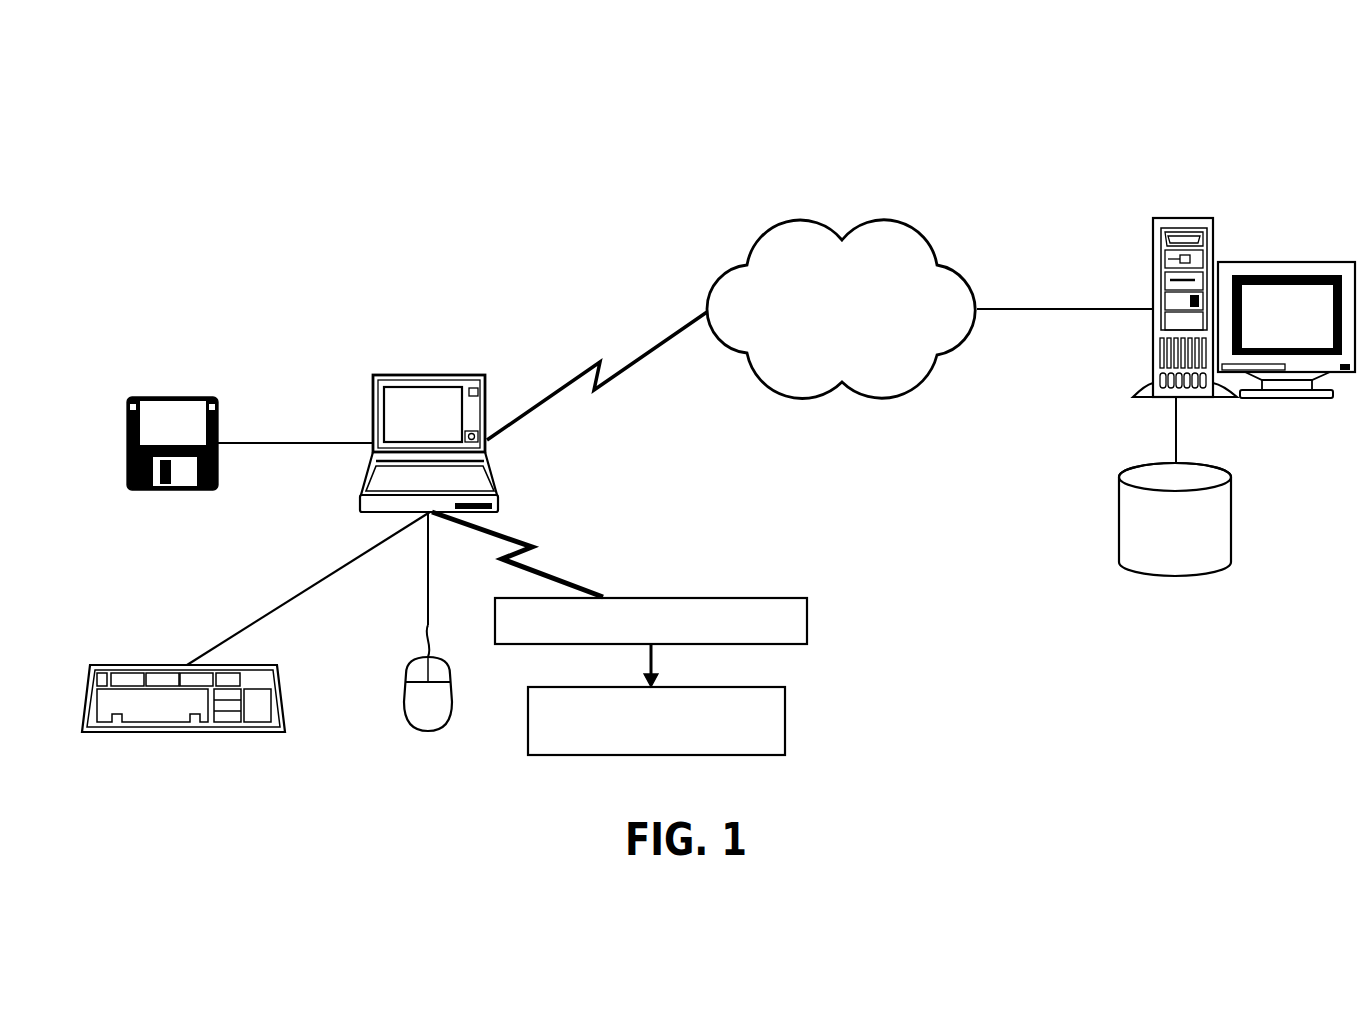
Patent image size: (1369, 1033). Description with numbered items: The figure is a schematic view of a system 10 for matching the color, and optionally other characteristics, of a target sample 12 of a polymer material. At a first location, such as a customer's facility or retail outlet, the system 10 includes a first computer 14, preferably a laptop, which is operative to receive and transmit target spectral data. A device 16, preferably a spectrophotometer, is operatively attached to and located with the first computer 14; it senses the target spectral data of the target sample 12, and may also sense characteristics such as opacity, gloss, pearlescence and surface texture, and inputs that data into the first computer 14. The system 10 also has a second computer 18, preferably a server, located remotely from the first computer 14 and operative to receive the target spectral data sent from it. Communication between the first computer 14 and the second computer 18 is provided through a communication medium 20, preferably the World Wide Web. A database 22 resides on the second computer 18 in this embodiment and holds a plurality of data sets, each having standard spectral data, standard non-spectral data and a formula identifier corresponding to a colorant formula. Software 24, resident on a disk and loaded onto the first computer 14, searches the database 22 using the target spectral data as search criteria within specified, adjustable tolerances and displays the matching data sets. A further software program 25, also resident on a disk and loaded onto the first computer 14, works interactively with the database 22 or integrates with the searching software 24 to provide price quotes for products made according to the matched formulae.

The system 10 is at (333, 327).
The target sample 12 is at (785, 710).
The first computer 14 is at (430, 375).
The device 16 is at (807, 620).
The second computer 18 is at (1287, 400).
The communication medium 20 is at (883, 398).
The database 22 is at (1119, 520).
The software 24 is at (172, 398).
The software program 25 is at (172, 398).